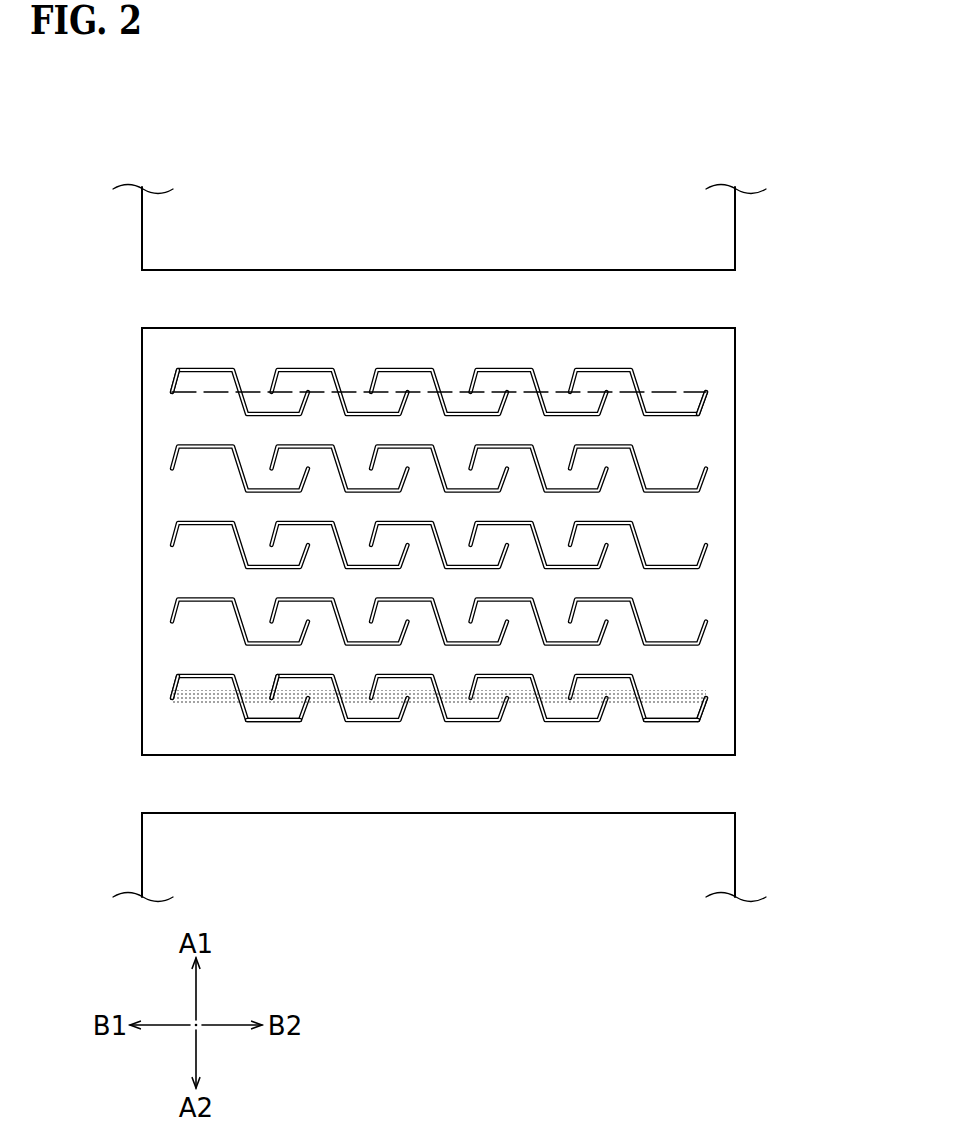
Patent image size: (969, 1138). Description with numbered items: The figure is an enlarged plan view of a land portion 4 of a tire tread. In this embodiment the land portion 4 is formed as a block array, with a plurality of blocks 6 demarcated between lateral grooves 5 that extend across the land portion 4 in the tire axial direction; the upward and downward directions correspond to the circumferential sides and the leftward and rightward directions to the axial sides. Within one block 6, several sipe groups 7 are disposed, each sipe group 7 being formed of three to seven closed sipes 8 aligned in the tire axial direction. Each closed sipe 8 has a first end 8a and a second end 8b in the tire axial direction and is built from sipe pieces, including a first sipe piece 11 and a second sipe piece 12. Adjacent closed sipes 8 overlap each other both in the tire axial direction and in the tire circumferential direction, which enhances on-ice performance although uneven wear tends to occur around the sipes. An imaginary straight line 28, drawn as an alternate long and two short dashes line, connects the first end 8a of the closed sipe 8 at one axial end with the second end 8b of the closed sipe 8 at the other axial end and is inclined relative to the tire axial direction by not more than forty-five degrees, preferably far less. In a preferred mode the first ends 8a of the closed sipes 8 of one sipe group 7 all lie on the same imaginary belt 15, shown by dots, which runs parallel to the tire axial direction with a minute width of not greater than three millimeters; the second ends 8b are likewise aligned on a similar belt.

The land portion 4 is at (390, 202).
The lateral groove 5 is at (553, 307).
The block 6 is at (128, 312).
The sipe group 7 is at (160, 376).
The closed sipe 8 is at (240, 396).
The first end 8a is at (172, 392).
The second end 8b is at (707, 390).
The first sipe piece 11 is at (203, 678).
The second sipe piece 12 is at (282, 720).
The imaginary belt 15 is at (680, 693).
The imaginary straight line 28 is at (693, 392).